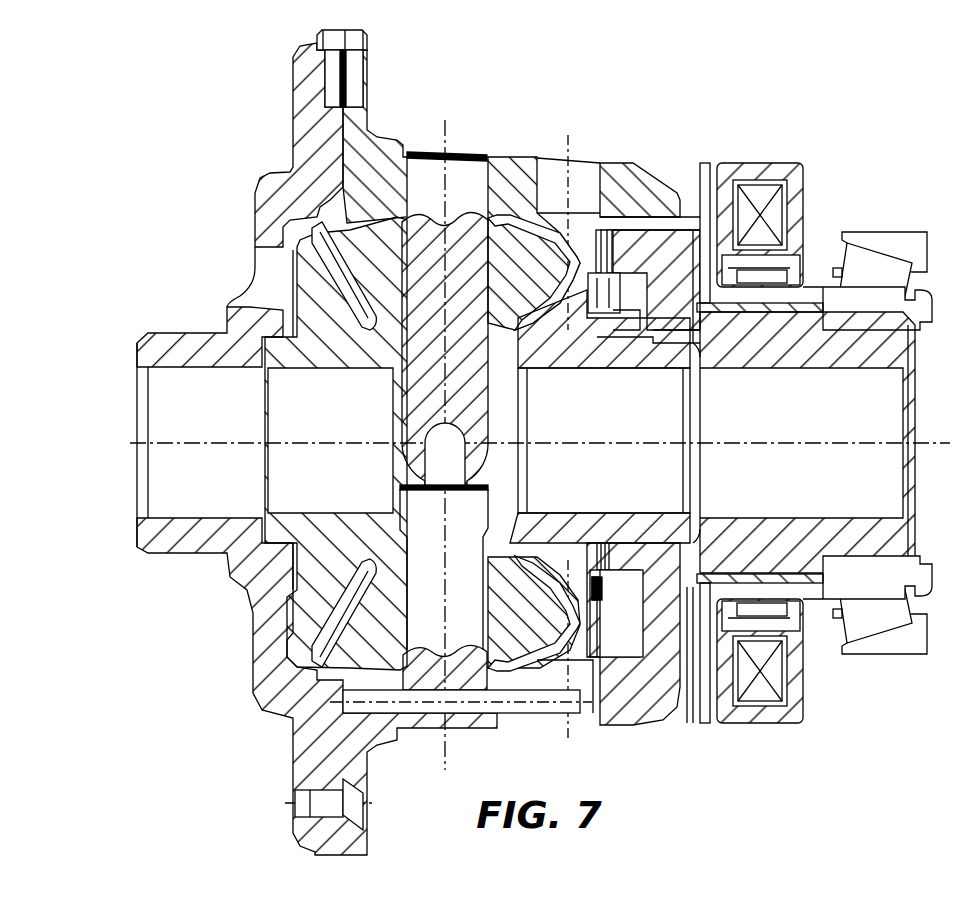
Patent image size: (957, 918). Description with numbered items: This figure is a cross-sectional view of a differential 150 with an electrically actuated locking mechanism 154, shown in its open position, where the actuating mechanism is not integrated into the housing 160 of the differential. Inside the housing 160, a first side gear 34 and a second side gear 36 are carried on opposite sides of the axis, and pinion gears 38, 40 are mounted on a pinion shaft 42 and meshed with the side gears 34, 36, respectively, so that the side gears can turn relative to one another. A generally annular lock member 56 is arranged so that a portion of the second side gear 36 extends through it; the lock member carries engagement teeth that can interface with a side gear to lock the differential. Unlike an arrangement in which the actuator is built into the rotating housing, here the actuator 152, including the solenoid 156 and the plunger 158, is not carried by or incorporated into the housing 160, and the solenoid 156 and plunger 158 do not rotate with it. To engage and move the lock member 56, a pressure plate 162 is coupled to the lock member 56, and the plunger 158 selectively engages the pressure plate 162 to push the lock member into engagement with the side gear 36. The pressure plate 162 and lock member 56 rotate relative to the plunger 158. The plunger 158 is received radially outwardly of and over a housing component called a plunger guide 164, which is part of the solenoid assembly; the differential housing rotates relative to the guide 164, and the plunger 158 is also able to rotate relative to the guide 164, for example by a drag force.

The first side gear 34 is at (297, 353).
The second side gear 36 is at (573, 357).
The pinion gear 38 is at (515, 240).
The pinion gear 40 is at (510, 650).
The pinion shaft 42 is at (468, 165).
The lock member 56 is at (680, 237).
The differential 150 is at (814, 202).
The actuator 152 is at (803, 197).
The locking mechanism 154 is at (810, 620).
The solenoid 156 is at (761, 178).
The plunger 158 is at (807, 273).
The housing 160 is at (619, 172).
The pressure plate 162 is at (704, 167).
The plunger guide 164 is at (770, 310).